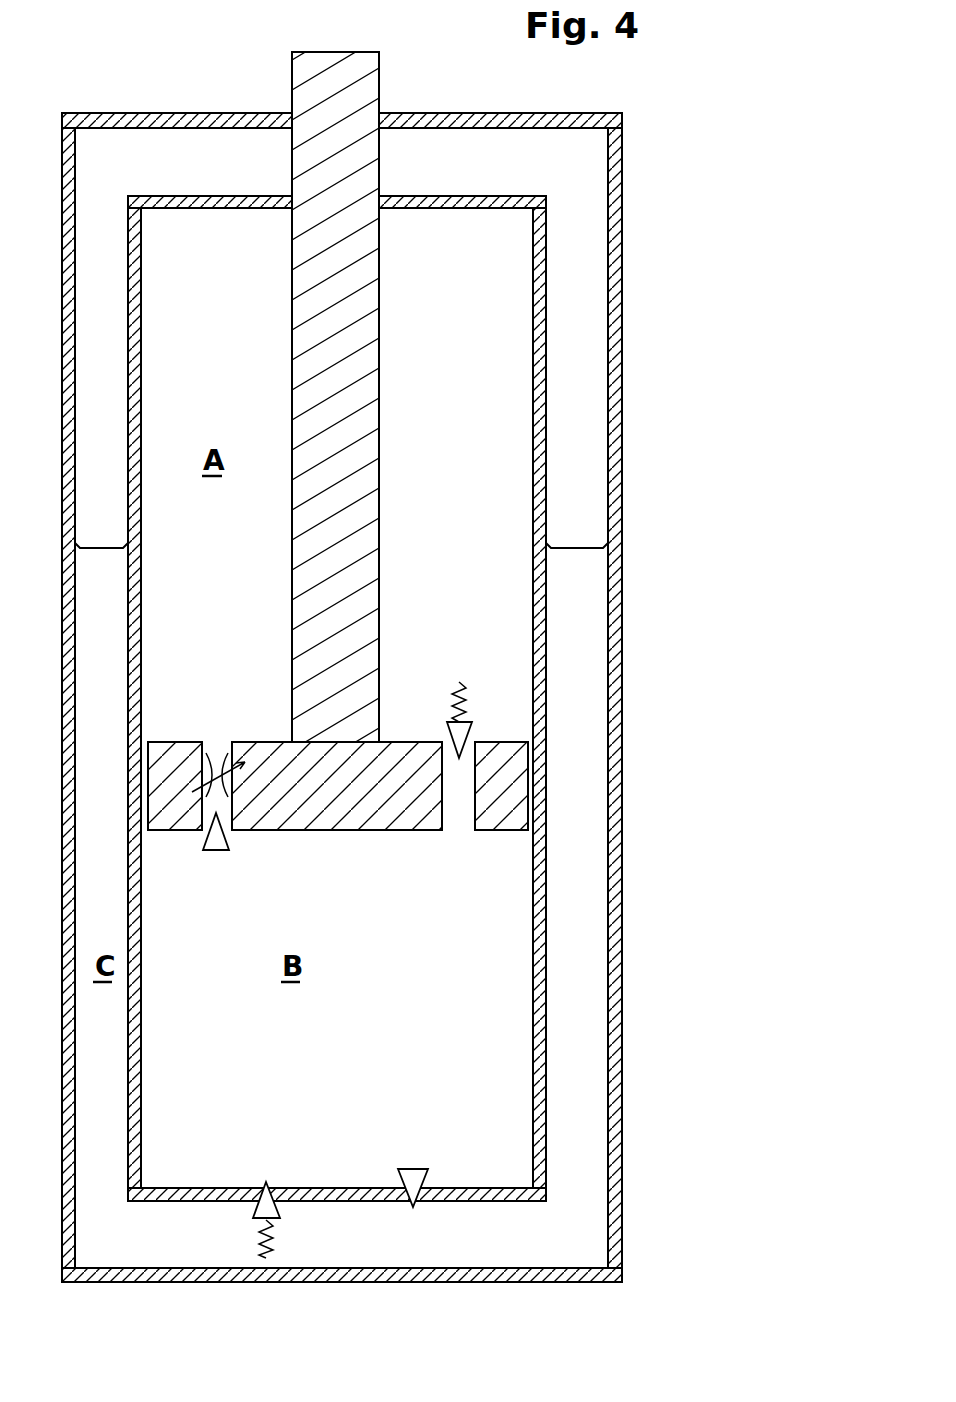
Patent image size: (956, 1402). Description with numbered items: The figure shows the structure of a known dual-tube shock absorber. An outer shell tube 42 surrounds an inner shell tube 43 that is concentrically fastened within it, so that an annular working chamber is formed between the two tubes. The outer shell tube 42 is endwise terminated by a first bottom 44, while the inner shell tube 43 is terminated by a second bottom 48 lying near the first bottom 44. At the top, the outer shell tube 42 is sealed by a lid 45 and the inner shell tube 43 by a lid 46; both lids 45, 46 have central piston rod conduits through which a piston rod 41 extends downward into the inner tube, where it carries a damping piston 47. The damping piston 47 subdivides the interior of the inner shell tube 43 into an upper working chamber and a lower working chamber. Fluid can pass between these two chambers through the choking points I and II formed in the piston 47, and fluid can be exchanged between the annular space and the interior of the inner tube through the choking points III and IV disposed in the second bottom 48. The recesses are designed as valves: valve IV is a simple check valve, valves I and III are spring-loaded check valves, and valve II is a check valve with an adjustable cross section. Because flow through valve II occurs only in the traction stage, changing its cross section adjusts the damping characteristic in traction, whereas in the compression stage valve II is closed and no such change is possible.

The piston rod 41 is at (370, 82).
The outer shell tube 42 is at (622, 470).
The inner shell tube 43 is at (540, 395).
The first bottom 44 is at (308, 1282).
The lid 45 is at (176, 113).
The lid 46 is at (497, 194).
The damping piston 47 is at (342, 812).
The second bottom 48 is at (333, 1201).
The choking point (spring-loaded check valve) I is at (459, 703).
The choking point (check valve with adjustable cross section) II is at (218, 773).
The choking point (spring-loaded check valve) III is at (265, 1196).
The choking point (simple check valve) IV is at (413, 1169).